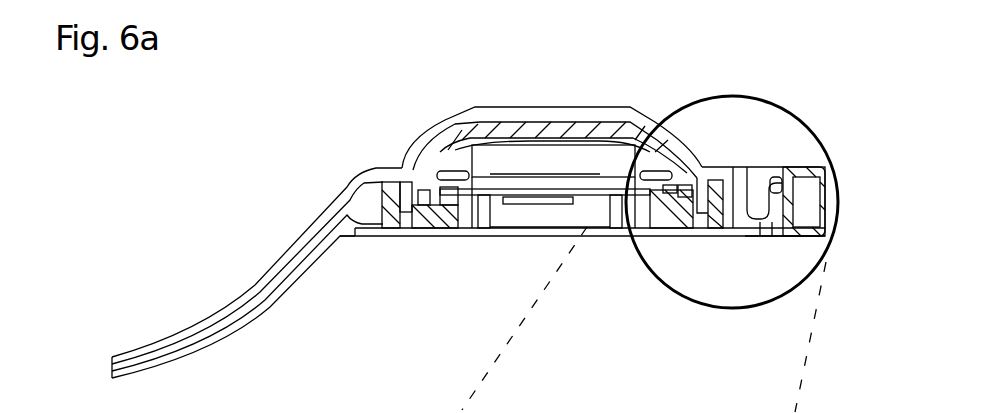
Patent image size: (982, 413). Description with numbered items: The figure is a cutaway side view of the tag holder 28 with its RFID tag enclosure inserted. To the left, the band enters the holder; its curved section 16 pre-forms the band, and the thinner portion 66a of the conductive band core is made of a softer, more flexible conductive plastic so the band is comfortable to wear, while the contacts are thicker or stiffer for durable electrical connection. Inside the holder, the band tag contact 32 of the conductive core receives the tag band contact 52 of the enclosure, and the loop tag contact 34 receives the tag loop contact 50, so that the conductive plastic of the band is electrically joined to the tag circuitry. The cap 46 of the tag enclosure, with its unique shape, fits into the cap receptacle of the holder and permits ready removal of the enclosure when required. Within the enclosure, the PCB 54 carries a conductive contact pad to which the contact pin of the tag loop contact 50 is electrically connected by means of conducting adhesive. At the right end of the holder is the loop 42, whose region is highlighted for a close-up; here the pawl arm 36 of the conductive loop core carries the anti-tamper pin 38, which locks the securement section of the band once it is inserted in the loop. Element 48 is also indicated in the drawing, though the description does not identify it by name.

The curved section 16 is at (195, 300).
The thinner portion of the band core 66a is at (257, 286).
The band tag contact 32 is at (372, 210).
The cap 46 is at (446, 136).
The tag band contact 52 is at (388, 181).
The tag holder 28 is at (550, 98).
The loop tag contact 34 is at (703, 173).
The pawl arm 36 is at (760, 175).
The anti-tamper pin 38 is at (782, 170).
The loop 42 is at (768, 236).
The bottom plate 48 is at (484, 234).
The PCB 54 is at (591, 196).
The tag loop contact 50 is at (681, 223).